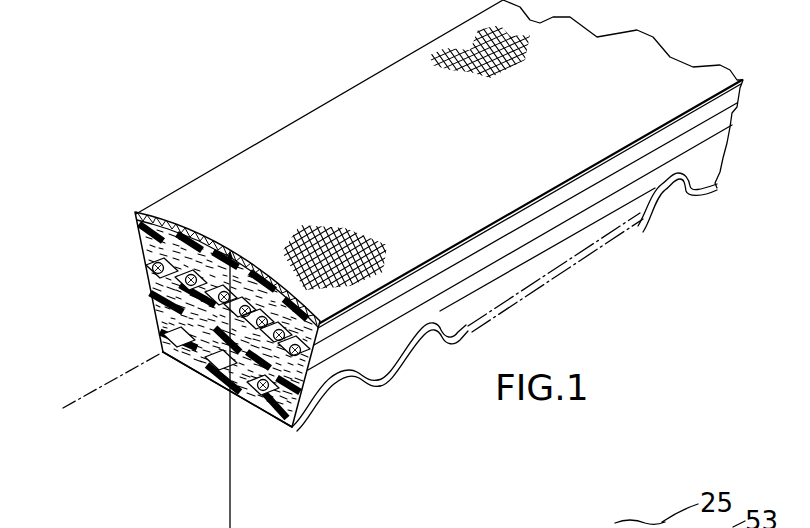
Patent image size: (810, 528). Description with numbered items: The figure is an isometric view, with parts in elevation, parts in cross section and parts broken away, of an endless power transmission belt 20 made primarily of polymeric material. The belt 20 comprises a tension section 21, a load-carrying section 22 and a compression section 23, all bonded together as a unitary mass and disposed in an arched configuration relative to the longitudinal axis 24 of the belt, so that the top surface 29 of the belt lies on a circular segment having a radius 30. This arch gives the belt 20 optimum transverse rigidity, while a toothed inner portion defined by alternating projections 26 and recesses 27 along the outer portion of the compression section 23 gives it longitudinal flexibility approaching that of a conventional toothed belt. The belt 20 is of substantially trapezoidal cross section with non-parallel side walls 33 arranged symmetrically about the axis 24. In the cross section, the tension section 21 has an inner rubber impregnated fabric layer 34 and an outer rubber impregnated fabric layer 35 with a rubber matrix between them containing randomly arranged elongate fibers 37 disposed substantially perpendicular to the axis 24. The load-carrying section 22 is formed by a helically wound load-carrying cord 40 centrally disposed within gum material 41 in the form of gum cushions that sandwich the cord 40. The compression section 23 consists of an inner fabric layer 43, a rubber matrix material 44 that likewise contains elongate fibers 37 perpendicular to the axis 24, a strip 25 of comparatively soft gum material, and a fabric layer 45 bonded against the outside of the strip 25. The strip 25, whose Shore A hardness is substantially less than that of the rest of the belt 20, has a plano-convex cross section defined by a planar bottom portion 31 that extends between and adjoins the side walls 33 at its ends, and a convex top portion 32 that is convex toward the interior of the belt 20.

The endless power transmission belt 20 is at (312, 70).
The tension section 21 is at (128, 228).
The load-carrying section 22 is at (140, 262).
The compression section 23 is at (147, 315).
The longitudinal axis 24 is at (97, 395).
The strip of comparatively soft gum material 25 is at (225, 374).
The projections 26 is at (378, 380).
The recesses 27 is at (353, 374).
The top surface 29 is at (558, 124).
The radius 30 is at (228, 473).
The planar bottom portion 31 is at (210, 368).
The convex top portion 32 is at (270, 423).
The side walls 33 is at (153, 307).
The inner rubber impregnated fabric layer 34 is at (140, 257).
The outer rubber impregnated fabric layer 35 is at (187, 187).
The elongate fibers 37 is at (200, 250).
The load-carrying cord 40 is at (237, 292).
The gum material 41 is at (313, 307).
The inner fabric layer 43 is at (155, 283).
The rubber matrix material 44 is at (163, 320).
The fabric layer 45 is at (207, 380).